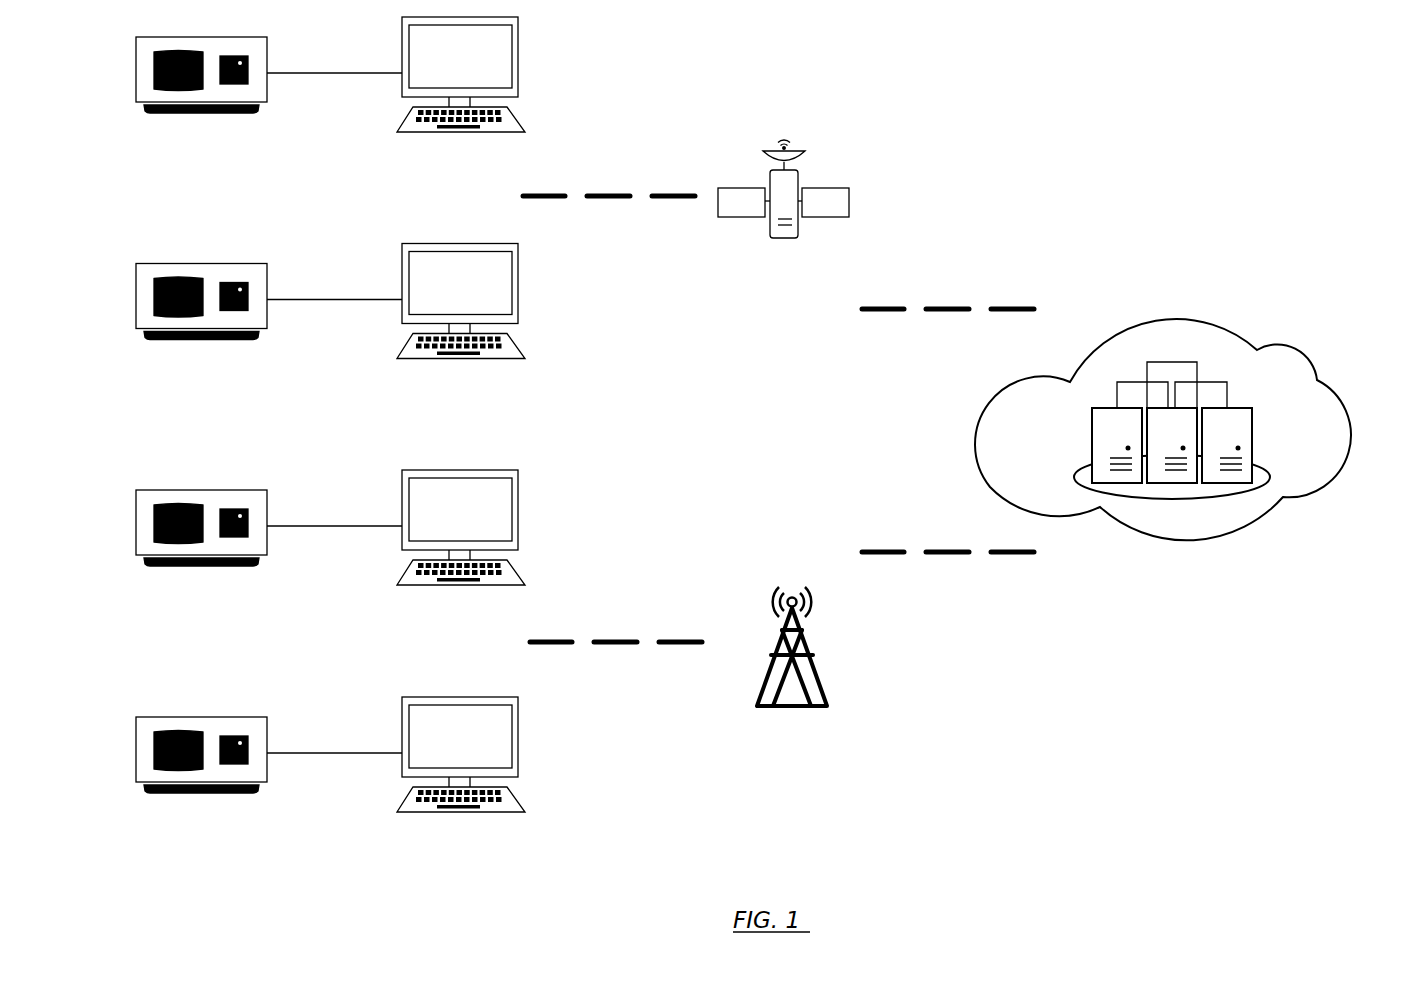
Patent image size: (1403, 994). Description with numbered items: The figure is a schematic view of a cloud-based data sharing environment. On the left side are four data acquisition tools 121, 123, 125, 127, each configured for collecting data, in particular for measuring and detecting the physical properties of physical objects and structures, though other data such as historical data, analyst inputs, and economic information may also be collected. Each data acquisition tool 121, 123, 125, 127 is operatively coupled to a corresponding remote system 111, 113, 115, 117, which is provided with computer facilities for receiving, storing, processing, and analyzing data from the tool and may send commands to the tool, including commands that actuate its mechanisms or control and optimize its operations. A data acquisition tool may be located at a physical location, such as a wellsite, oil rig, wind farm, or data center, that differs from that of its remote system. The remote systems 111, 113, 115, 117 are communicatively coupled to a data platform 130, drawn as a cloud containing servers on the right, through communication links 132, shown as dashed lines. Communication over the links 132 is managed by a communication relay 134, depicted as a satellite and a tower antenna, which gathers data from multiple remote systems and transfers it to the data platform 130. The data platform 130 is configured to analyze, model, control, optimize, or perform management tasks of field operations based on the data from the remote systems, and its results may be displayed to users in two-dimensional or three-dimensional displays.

The remote system 111 is at (477, 170).
The remote system 113 is at (477, 398).
The remote system 115 is at (477, 624).
The remote system 117 is at (477, 850).
The data acquisition tool 121 is at (218, 170).
The data acquisition tool 123 is at (218, 398).
The data acquisition tool 125 is at (218, 624).
The data acquisition tool 127 is at (218, 850).
The data platform 130 is at (1189, 584).
The communication link 132 is at (624, 228).
The communication relay 134 is at (802, 282).